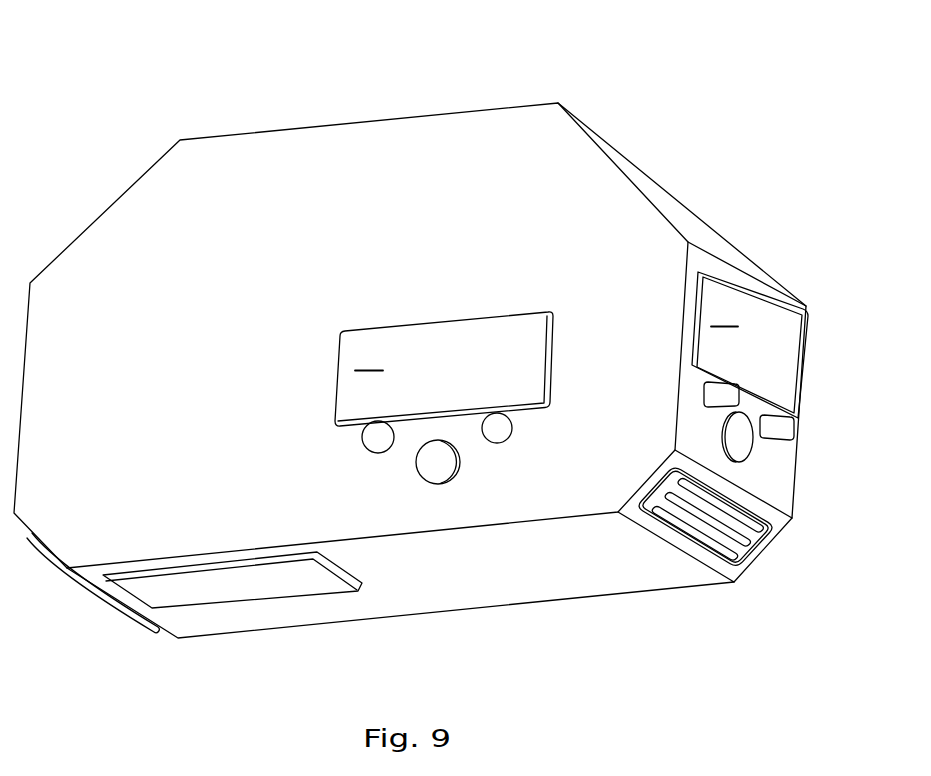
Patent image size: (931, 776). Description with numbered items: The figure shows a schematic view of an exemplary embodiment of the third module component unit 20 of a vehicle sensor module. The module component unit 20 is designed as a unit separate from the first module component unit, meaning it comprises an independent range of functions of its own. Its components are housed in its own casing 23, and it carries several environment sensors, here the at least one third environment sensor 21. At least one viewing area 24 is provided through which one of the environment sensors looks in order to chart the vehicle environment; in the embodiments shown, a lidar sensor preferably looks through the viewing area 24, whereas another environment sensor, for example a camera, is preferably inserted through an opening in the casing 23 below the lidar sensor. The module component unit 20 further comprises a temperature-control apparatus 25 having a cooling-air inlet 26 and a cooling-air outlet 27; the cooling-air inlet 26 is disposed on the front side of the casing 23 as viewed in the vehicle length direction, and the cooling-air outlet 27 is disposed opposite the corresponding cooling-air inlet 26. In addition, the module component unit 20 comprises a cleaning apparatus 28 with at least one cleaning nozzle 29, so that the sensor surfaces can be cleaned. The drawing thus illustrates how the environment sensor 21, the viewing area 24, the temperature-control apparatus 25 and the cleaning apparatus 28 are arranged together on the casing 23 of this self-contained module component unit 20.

The third module component unit 20 is at (288, 160).
The third environment sensor 21 is at (436, 350).
The casing 23 is at (667, 192).
The viewing area 24 is at (571, 349).
The temperature-control apparatus 25 is at (723, 532).
The cooling-air inlet 26 is at (695, 518).
The cooling-air outlet 27 is at (92, 589).
The cleaning apparatus 28 is at (796, 423).
The cleaning nozzle 29 is at (716, 390).